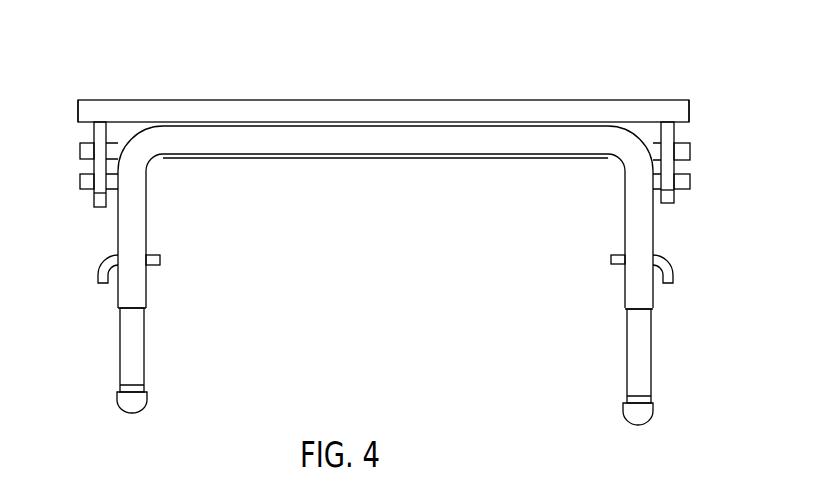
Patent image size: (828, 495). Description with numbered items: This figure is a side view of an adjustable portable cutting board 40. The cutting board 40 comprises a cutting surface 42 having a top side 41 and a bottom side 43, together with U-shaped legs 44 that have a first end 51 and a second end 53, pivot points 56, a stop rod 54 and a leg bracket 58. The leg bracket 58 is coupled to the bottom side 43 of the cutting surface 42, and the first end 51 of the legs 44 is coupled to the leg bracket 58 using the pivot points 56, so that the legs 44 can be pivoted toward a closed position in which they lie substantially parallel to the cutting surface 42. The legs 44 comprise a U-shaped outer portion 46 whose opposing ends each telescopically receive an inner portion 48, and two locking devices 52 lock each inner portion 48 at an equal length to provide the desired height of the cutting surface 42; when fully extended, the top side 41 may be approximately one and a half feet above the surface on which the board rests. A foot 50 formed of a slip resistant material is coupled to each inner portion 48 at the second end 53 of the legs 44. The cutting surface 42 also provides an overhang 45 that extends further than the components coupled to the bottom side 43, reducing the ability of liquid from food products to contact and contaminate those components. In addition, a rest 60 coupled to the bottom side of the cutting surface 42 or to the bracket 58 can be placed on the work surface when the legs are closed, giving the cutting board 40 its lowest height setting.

The adjustable portable cutting board 40 is at (149, 72).
The top side 41 is at (295, 100).
The cutting surface 42 is at (436, 100).
The bottom side 43 is at (682, 122).
The U-shaped legs 44 is at (700, 327).
The overhang 45 is at (76, 108).
The outer portion 46 is at (396, 147).
The inner portion 48 is at (140, 355).
The foot 50 is at (133, 402).
The first end 51 is at (137, 181).
The locking device 52 is at (98, 289).
The second end 53 is at (136, 385).
The stop rod 54 is at (682, 150).
The pivot point 56 is at (685, 178).
The leg bracket 58 is at (96, 140).
The rest 60 is at (96, 197).